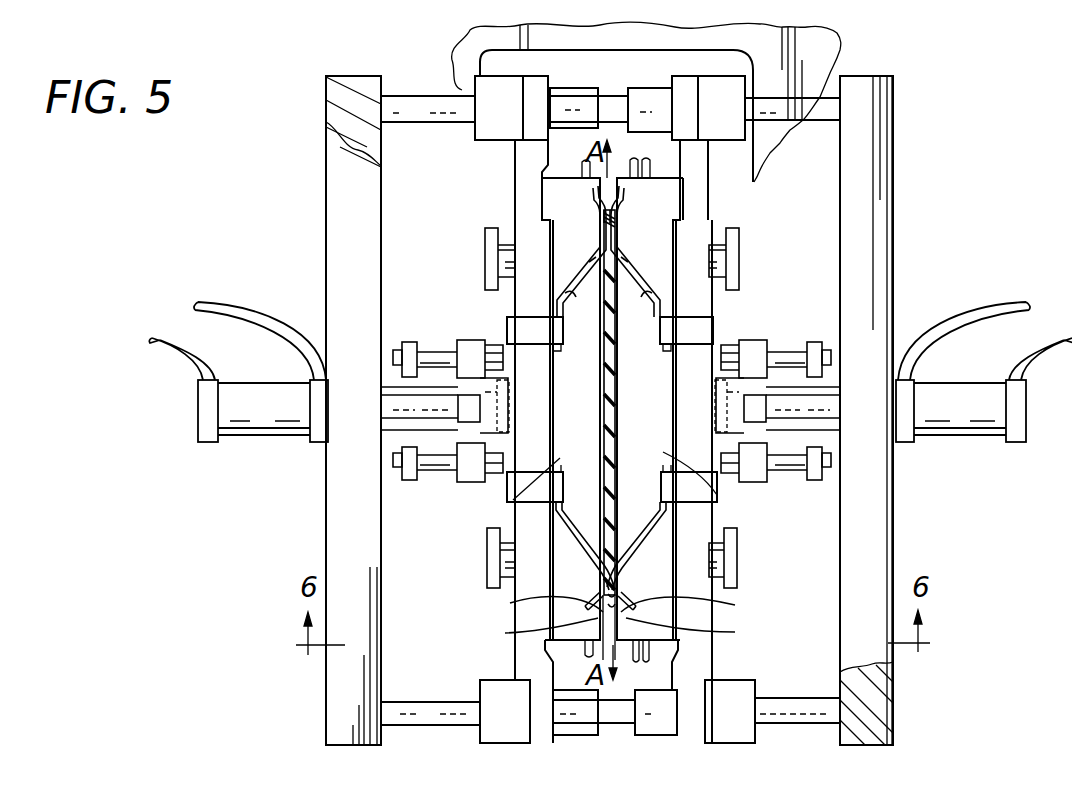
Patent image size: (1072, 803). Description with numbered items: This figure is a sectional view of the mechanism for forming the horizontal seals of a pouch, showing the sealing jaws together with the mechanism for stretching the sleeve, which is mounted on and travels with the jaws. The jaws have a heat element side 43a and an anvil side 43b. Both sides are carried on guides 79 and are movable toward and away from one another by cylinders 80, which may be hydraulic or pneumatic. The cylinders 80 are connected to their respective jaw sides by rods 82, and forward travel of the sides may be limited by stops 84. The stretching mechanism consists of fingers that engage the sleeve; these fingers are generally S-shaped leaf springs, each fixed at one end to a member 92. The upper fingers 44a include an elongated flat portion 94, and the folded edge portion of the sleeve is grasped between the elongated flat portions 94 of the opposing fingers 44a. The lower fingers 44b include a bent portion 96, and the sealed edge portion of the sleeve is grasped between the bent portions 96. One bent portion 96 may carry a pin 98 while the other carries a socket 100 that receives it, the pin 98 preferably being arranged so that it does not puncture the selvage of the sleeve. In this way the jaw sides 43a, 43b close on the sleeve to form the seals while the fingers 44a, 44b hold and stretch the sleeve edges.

The guides 79 is at (437, 105).
The cylinders 80 is at (263, 418).
The rods 82 is at (381, 410).
The stops 84 is at (410, 342).
The member 92 is at (537, 394).
The elongated flat portion 94 is at (602, 218).
The fingers 44a is at (557, 313).
The fingers 44b is at (605, 585).
The heat element side 43a is at (508, 496).
The anvil side 43b is at (722, 492).
The bent portion 96 is at (618, 608).
The pin 98 is at (529, 635).
The socket 100 is at (708, 635).